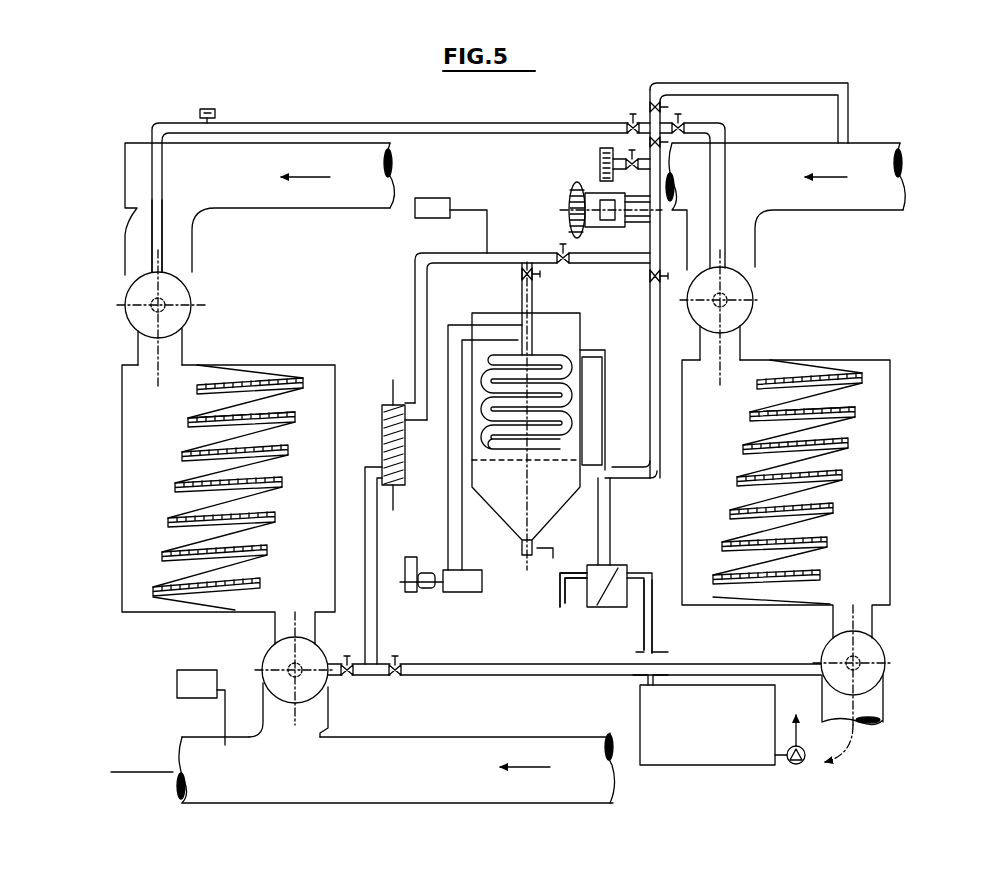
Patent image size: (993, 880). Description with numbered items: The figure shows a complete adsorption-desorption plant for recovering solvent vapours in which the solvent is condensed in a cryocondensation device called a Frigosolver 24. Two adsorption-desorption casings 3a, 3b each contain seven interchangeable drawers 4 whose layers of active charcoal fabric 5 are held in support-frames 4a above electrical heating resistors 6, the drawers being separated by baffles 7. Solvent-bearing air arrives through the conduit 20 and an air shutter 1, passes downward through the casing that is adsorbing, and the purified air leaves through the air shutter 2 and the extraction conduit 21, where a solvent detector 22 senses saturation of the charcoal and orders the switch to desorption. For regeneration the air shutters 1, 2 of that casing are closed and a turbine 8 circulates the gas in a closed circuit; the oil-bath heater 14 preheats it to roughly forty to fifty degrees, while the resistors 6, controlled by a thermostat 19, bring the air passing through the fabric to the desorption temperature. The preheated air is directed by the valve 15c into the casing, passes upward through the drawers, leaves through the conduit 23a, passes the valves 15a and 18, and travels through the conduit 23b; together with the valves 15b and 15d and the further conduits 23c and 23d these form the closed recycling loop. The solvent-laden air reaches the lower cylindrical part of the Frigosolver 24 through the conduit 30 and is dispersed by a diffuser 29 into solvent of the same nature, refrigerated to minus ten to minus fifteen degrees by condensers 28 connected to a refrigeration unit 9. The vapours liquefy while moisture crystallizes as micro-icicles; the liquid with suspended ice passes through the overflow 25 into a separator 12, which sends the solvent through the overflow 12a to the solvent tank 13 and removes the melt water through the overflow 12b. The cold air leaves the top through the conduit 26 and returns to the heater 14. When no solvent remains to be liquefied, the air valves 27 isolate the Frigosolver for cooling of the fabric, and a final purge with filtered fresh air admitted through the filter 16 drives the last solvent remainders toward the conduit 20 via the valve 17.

The air shutter 1 is at (147, 297).
The air shutter 2 is at (283, 682).
The adsorption-desorption casing 3a is at (122, 431).
The adsorption-desorption casing 3b is at (890, 395).
The interchangeable drawer 4 is at (175, 419).
The support-frame 4a is at (207, 417).
The active charcoal fabric layer 5 is at (182, 485).
The heating resistor 6 is at (177, 490).
The baffle 7 is at (173, 535).
The turbine 8 is at (572, 200).
The refrigeration unit 9 is at (450, 583).
The separator 12 is at (600, 575).
The solvent overflow 12a is at (652, 630).
The water overflow 12b is at (560, 596).
The solvent tank 13 is at (670, 718).
The oil-bath heater 14 is at (388, 404).
The valve 15a is at (625, 118).
The valve 15b is at (675, 121).
The valve 15c is at (349, 678).
The valve 15d is at (399, 677).
The filter 16 is at (597, 165).
The valve 17 is at (663, 107).
The valve 18 is at (665, 141).
The thermostat 19 is at (215, 110).
The conduit 20 is at (910, 177).
The extraction conduit 21 is at (218, 763).
The solvent detector 22 is at (183, 682).
The conduit 23a is at (329, 123).
The conduit 23b is at (655, 240).
The pipe 23c is at (505, 258).
The pipe 23d is at (162, 250).
The Frigosolver cryocondensation device 24 is at (553, 337).
The overflow 25 is at (605, 363).
The conduit 26 is at (522, 290).
The air valve 27 is at (645, 277).
The condenser 28 is at (507, 360).
The diffuser 29 is at (478, 460).
The conduit 30 is at (633, 476).